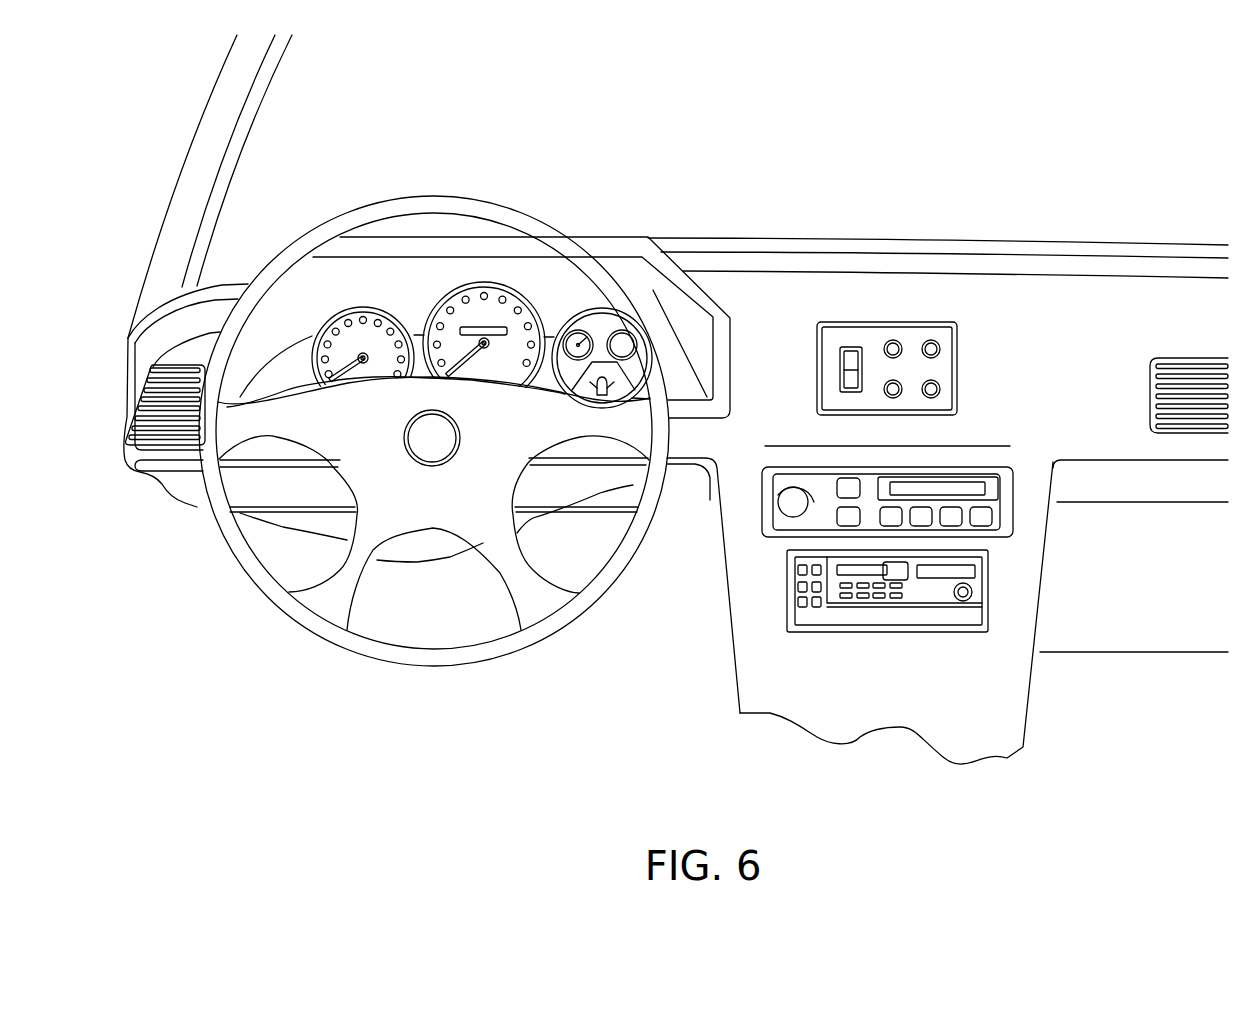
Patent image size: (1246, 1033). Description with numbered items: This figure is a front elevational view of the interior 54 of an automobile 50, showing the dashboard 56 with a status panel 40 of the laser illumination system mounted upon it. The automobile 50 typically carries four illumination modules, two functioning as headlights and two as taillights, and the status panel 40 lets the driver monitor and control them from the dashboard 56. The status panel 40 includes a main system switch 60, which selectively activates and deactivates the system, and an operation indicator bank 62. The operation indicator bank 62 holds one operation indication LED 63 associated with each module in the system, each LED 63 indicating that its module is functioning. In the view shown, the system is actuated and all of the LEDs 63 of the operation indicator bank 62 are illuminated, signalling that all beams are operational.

The automobile 50 is at (173, 162).
The interior 54 is at (667, 197).
The dashboard 56 is at (1062, 351).
The status panel 40 is at (957, 352).
The main system switch 60 is at (847, 362).
The operation indicator bank 62 is at (943, 318).
The operation indication LED 63 is at (940, 389).